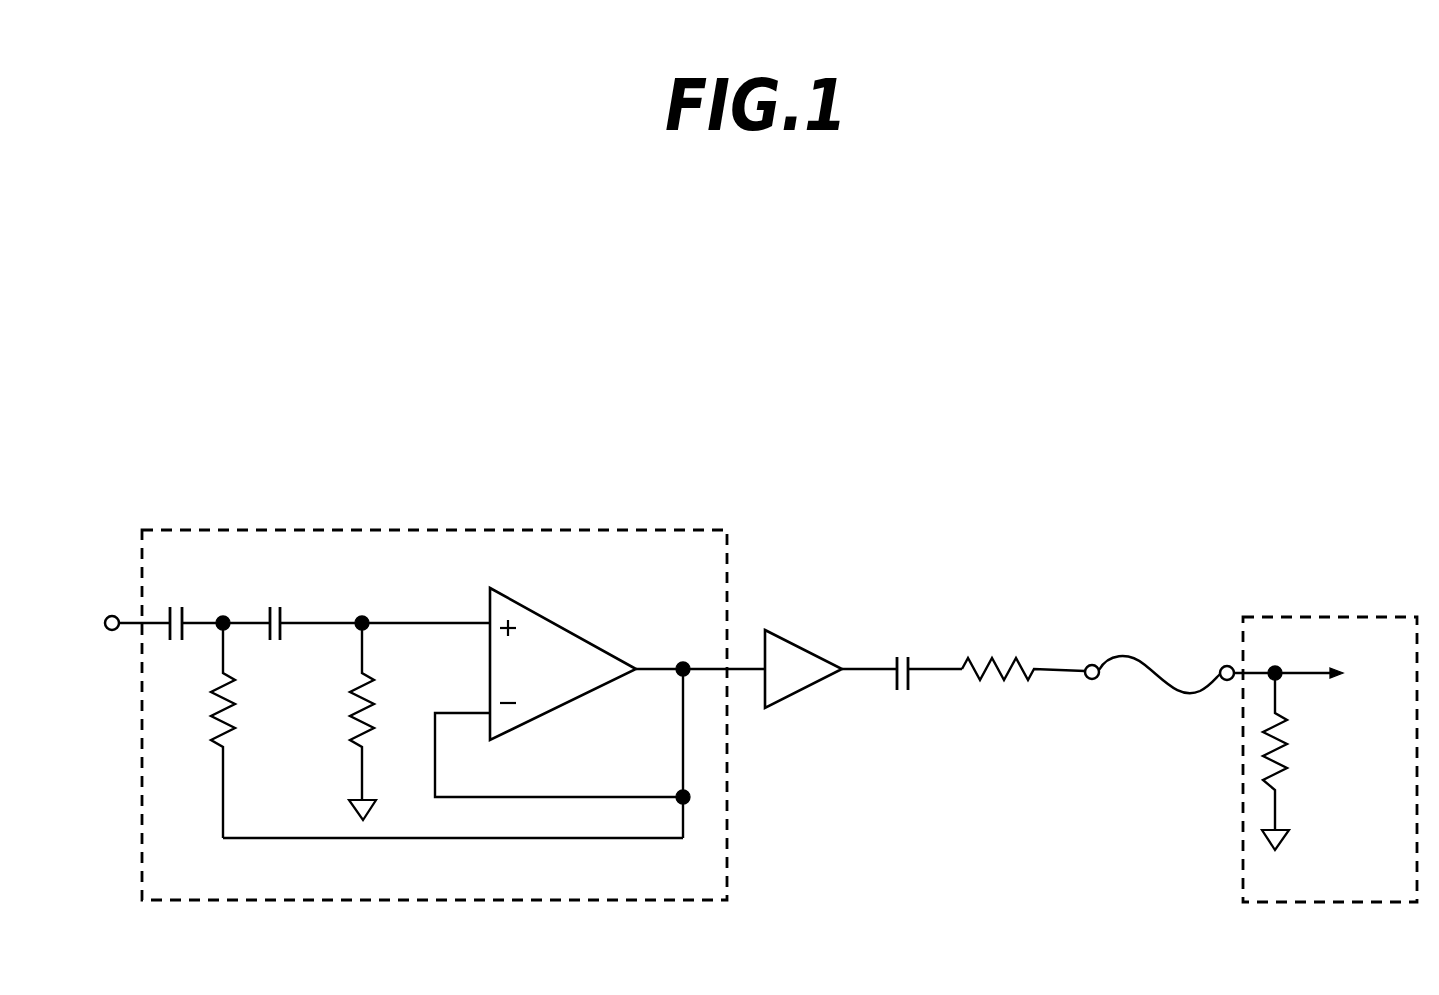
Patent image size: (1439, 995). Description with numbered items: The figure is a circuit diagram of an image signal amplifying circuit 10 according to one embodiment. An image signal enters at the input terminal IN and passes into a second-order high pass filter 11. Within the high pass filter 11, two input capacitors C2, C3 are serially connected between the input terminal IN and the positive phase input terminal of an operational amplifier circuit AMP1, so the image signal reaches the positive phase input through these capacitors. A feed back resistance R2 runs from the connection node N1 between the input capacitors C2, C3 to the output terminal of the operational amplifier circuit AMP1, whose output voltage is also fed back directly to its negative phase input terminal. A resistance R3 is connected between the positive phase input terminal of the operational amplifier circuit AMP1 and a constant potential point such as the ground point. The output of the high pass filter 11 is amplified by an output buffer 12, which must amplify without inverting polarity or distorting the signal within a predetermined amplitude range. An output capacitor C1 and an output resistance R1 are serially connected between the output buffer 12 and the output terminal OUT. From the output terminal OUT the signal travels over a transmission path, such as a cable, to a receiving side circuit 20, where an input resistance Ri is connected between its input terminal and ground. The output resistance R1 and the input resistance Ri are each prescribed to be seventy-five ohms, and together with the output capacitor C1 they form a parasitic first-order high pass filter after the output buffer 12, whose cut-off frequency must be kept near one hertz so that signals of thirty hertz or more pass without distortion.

The image signal amplifying circuit 10 is at (842, 448).
The second-order high pass filter 11 is at (419, 530).
The output buffer 12 is at (800, 647).
The receiving side circuit 20 is at (1313, 616).
The input terminal IN is at (112, 616).
The output terminal OUT is at (1092, 665).
The connection node N1 is at (227, 618).
The output capacitor C1 is at (924, 698).
The input capacitor C2 is at (191, 602).
The input capacitor C3 is at (374, 646).
The output resistance R1 is at (1023, 699).
The feed back resistance R2 is at (447, 730).
The resistance R3 is at (386, 721).
The operational amplifier circuit AMP1 is at (565, 628).
The input resistance Ri is at (1299, 758).